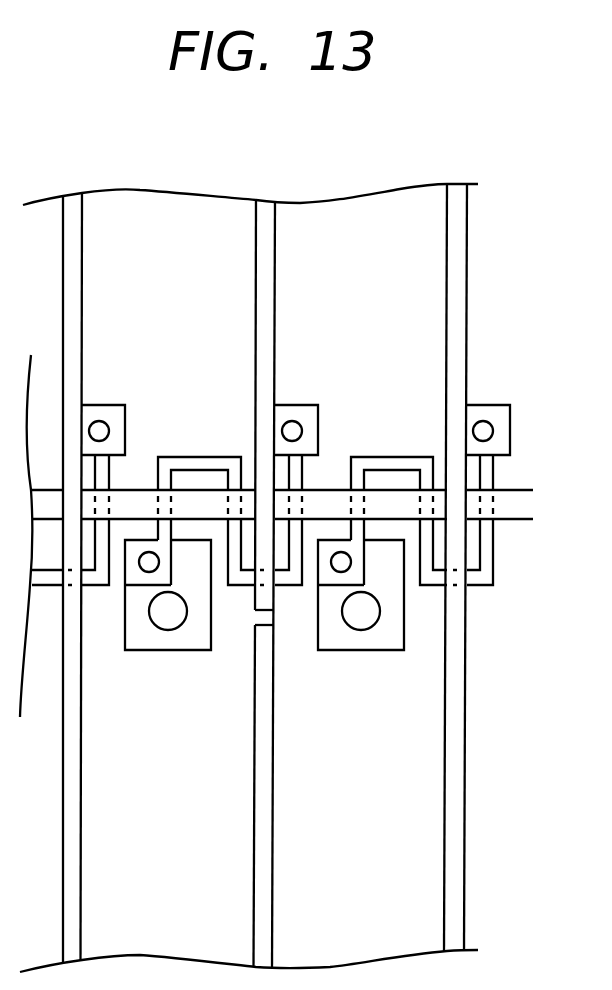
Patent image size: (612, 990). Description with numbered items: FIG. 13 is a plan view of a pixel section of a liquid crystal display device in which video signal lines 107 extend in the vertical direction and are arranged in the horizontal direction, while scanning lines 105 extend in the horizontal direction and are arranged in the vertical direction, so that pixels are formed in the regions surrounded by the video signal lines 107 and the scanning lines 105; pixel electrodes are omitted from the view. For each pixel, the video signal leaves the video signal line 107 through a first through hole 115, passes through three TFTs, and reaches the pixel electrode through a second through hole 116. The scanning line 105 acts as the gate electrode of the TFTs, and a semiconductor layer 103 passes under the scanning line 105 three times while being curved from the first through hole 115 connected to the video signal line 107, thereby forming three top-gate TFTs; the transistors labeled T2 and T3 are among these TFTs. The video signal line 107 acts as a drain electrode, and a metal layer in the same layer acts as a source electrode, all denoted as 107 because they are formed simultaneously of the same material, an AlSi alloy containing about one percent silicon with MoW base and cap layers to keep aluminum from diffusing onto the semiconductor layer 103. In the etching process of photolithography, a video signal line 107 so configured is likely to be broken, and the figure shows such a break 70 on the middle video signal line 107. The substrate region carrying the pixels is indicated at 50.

The substrate 50 is at (415, 803).
The break 70 is at (258, 618).
The semiconductor layer 103 is at (495, 541).
The scanning line 105 is at (512, 497).
The video signal line 107 is at (467, 253).
The first through hole 115 is at (484, 421).
The second through hole 116 is at (363, 615).
The second thin film transistor T2 is at (236, 506).
The third thin film transistor T3 is at (161, 510).